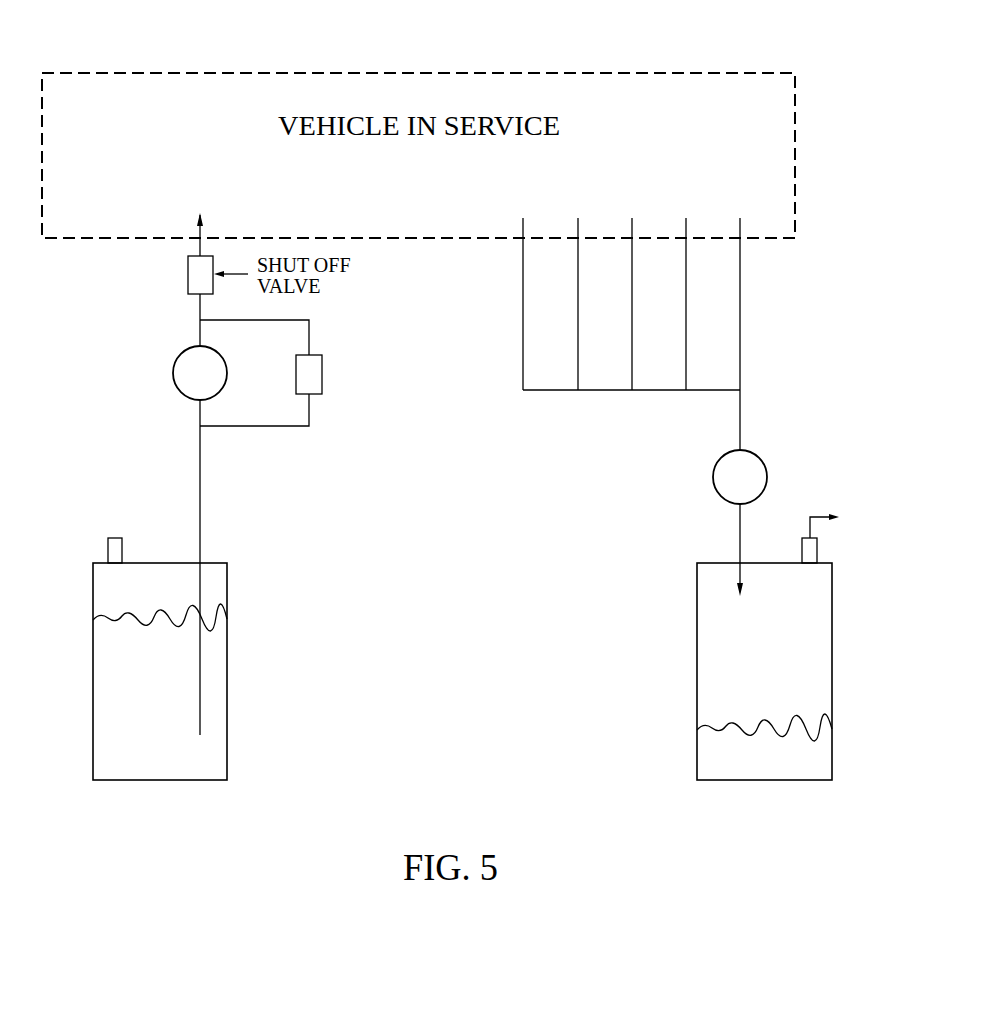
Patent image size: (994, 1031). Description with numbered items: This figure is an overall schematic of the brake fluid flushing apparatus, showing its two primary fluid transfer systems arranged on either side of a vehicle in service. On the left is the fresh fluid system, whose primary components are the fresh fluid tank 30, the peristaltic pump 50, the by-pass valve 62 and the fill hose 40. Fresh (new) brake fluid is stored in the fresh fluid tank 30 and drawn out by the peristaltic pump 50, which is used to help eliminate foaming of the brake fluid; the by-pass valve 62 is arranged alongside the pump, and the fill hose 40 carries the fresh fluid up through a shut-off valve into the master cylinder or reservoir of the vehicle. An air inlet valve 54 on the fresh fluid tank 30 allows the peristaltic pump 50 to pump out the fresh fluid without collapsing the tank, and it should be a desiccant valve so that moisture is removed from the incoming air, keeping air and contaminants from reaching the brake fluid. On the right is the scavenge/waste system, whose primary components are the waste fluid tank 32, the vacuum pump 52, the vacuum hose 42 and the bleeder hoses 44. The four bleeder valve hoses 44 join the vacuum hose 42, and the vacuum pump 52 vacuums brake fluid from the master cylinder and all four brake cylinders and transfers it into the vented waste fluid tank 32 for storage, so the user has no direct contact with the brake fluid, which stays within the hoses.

The fresh fluid tank 30 is at (105, 682).
The waste fluid tank 32 is at (812, 642).
The fill hose 40 is at (200, 500).
The vacuum hose 42 is at (742, 293).
The bleeder valve hoses 44 is at (686, 212).
The peristaltic pump 50 is at (186, 376).
The vacuum pump 52 is at (752, 478).
The air inlet valve 54 is at (108, 540).
The by-pass valve 62 is at (318, 372).